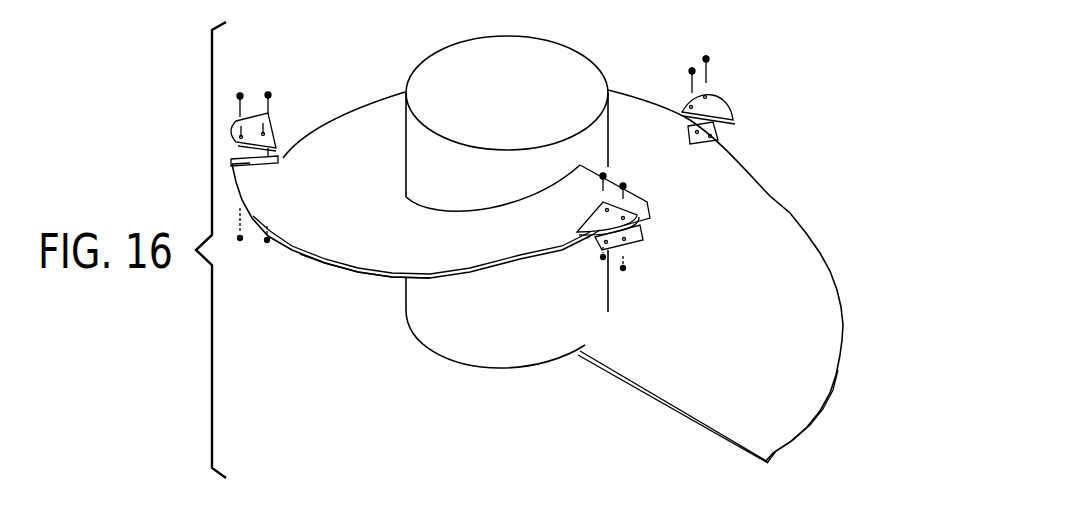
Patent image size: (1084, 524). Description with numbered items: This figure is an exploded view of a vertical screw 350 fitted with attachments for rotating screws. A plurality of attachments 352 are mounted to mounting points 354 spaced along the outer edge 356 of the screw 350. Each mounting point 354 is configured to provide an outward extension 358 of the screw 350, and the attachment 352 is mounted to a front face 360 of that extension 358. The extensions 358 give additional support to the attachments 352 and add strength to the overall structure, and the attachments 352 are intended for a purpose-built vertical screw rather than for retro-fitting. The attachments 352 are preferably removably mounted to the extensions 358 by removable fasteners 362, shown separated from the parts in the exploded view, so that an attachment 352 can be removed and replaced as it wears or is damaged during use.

The screw 350 is at (360, 115).
The attachment 352 is at (248, 123).
The mounting point 354 is at (513, 152).
The outer edge 356 is at (357, 274).
The outward extension 358 is at (262, 208).
The front face 360 is at (250, 167).
The removable fastener 362 is at (706, 54).